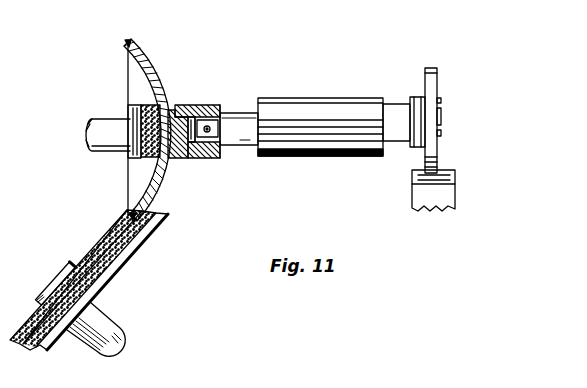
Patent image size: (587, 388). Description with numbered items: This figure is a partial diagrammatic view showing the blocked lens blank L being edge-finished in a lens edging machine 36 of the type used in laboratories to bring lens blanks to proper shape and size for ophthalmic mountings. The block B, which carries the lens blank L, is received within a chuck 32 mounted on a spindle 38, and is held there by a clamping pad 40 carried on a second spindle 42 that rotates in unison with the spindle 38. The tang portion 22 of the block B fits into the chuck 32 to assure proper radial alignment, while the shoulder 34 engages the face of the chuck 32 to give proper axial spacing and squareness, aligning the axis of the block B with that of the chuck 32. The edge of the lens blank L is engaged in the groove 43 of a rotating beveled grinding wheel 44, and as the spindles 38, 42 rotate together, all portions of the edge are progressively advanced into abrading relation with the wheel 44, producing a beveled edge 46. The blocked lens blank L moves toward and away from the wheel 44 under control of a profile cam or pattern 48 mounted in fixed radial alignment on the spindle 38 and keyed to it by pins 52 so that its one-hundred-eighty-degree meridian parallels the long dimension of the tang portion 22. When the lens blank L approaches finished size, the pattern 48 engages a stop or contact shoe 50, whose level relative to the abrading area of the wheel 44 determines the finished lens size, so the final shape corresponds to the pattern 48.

The tang portion 22 is at (181, 150).
The chuck 32 is at (210, 101).
The shoulder 34 is at (181, 105).
The lens edging machine 36 is at (286, 93).
The spindle 38 is at (243, 142).
The clamping pad 40 is at (132, 153).
The spindle 42 is at (107, 124).
The groove 43 is at (160, 209).
The beveled grinding wheel 44 is at (90, 257).
The beveled edge 46 is at (129, 42).
The profile cam or pattern 48 is at (437, 82).
The stop or contact shoe 50 is at (444, 172).
The pins 52 is at (442, 100).
The lens blank L is at (150, 66).
The block B is at (175, 166).